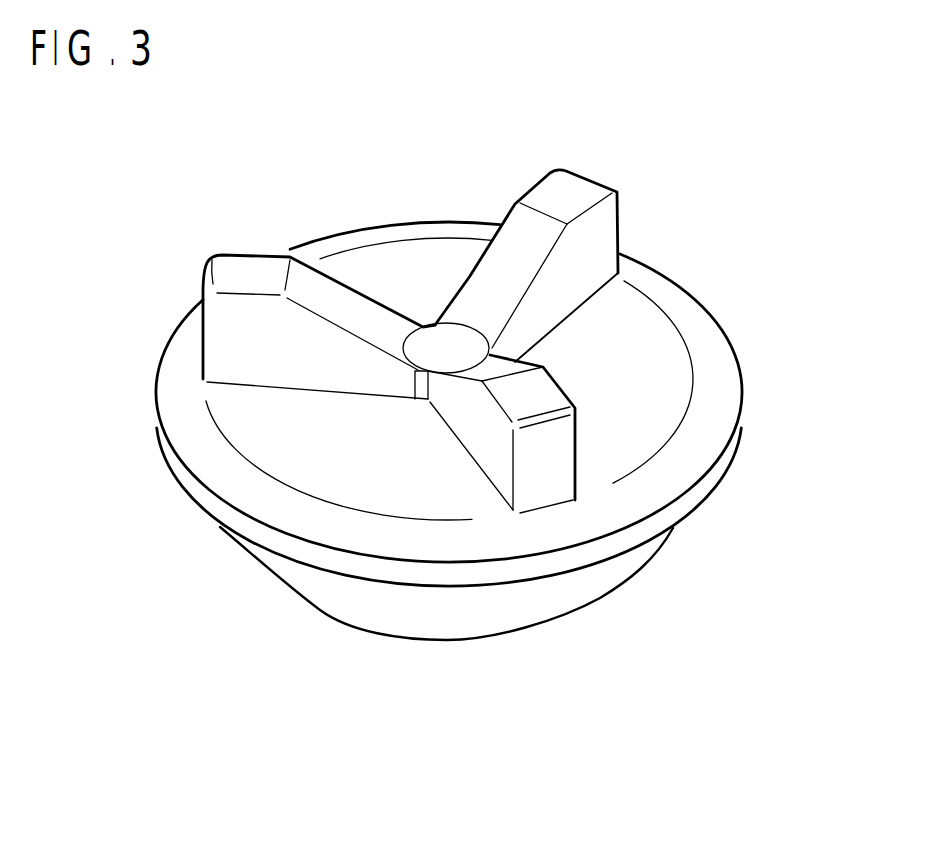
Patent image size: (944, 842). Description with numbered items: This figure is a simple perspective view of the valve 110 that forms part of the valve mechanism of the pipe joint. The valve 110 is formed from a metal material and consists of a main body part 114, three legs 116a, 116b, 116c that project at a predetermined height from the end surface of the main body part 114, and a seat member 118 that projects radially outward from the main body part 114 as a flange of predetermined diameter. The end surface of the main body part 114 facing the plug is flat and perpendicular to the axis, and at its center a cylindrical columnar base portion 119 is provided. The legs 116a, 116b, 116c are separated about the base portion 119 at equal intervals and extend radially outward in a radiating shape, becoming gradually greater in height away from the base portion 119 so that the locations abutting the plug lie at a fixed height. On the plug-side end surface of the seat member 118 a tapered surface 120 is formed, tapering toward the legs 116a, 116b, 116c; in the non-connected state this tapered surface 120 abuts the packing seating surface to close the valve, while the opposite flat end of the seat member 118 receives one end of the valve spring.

The valve 110 is at (708, 252).
The main body part 114 is at (472, 615).
The leg 116a is at (238, 270).
The leg 116b is at (548, 394).
The leg 116c is at (550, 190).
The seat member 118 is at (178, 468).
The base portion 119 is at (430, 340).
The tapered surface 120 is at (698, 446).